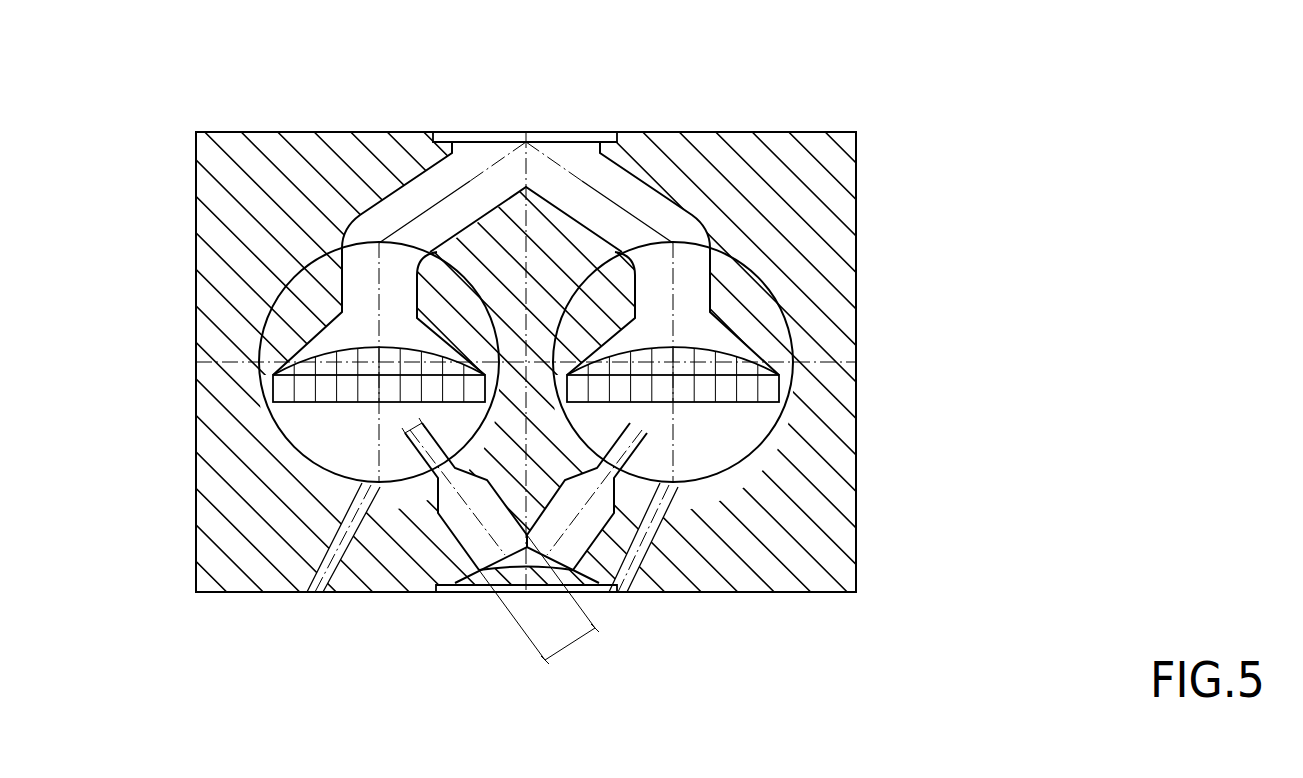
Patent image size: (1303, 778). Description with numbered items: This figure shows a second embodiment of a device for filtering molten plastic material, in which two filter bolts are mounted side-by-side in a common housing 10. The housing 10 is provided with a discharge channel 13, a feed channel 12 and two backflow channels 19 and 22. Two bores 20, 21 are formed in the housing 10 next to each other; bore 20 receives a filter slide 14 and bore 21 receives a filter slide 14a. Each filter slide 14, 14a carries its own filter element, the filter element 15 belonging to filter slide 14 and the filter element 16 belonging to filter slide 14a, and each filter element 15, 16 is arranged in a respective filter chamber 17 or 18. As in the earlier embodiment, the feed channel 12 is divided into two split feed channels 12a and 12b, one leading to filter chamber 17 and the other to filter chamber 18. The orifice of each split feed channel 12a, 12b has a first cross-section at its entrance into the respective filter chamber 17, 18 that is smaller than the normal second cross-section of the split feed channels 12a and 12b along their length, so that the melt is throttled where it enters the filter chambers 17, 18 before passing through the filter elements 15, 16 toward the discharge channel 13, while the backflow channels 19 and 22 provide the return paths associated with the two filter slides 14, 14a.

The housing 10 is at (738, 142).
The feed channel 12 is at (527, 688).
The split feed channel 12a is at (457, 520).
The split feed channel 12b is at (600, 525).
The discharge channel 13 is at (572, 130).
The filter slide 14 is at (455, 313).
The filter slide 14a is at (762, 320).
The filter element 15 is at (290, 378).
The filter element 16 is at (780, 407).
The filter chamber 17 is at (379, 453).
The filter chamber 18 is at (673, 453).
The backflow channel 19 is at (313, 592).
The bore 20 is at (267, 336).
The bore 21 is at (778, 321).
The backflow channel 22 is at (622, 470).